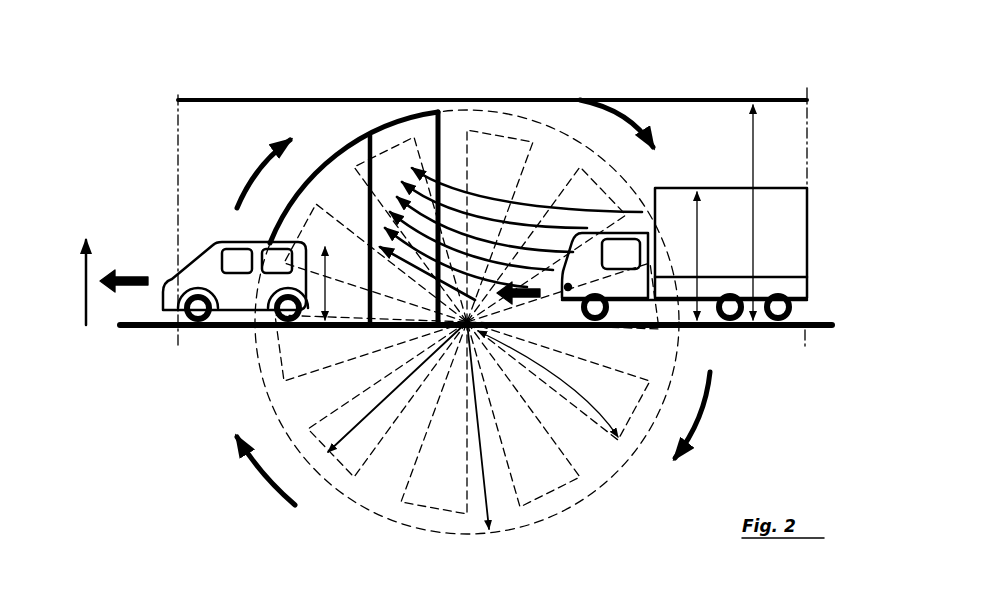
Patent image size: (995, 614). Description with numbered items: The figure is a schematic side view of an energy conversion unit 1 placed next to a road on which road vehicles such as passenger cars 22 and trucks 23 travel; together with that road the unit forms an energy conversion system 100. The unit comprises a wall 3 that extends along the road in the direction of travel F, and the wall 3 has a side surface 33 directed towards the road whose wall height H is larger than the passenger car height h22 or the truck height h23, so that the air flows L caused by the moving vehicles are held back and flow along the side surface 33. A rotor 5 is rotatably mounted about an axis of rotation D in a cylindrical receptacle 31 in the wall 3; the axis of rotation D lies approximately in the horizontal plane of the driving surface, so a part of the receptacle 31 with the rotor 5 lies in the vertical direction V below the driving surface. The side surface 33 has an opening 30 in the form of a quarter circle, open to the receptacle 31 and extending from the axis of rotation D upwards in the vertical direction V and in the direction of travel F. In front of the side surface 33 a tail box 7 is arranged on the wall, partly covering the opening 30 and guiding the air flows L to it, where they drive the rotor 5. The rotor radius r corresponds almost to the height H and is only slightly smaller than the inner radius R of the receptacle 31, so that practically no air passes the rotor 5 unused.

The energy conversion system 100 is at (158, 50).
The energy conversion unit 1 is at (135, 143).
The wall 3 is at (682, 113).
The rotor 5 is at (392, 144).
The tail box 7 is at (327, 190).
The opening 30 is at (427, 140).
The receptacle 31 is at (548, 120).
The side surface 33 is at (780, 147).
The passenger car 22 is at (240, 283).
The truck 23 is at (800, 245).
The air flow L is at (487, 197).
The wall height H is at (753, 253).
The truck height h23 is at (713, 256).
The passenger car height h22 is at (350, 335).
The vertical direction V is at (90, 298).
The direction of travel F is at (124, 274).
The axis of rotation D is at (477, 330).
The inner radius R is at (483, 507).
The rotor radius r is at (343, 432).